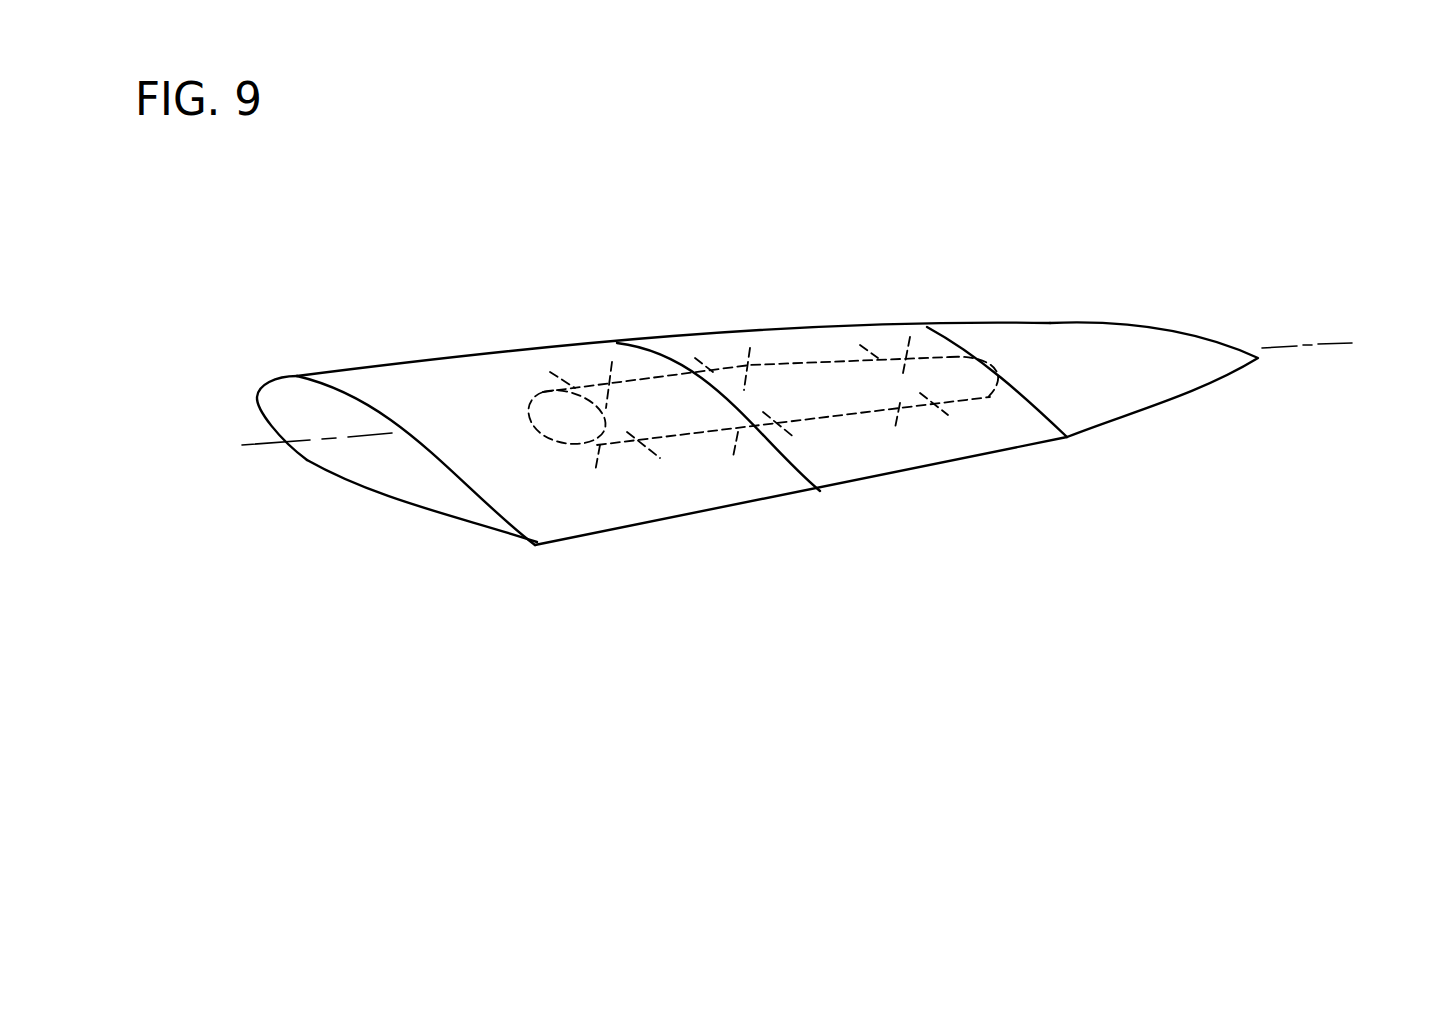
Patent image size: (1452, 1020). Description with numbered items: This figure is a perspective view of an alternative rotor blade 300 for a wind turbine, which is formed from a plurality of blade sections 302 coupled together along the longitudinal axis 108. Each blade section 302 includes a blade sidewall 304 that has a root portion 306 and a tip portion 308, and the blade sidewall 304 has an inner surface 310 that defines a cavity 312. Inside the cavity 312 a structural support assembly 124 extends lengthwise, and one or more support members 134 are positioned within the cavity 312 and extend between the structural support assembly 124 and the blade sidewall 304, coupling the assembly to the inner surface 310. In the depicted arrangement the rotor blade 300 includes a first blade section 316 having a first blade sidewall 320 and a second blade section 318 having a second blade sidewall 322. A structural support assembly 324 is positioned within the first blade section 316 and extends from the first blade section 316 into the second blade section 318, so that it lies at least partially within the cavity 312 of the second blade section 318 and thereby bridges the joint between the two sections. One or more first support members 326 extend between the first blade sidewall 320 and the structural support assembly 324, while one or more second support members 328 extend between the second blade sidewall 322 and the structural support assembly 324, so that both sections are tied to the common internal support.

The rotor blade 300 is at (1183, 195).
The blade section 302 is at (420, 358).
The blade sidewall 304 is at (637, 500).
The root portion 306 is at (555, 558).
The tip portion 308 is at (768, 520).
The inner surface 310 is at (417, 478).
The cavity 312 is at (330, 490).
The first blade section 316 is at (732, 335).
The second blade section 318 is at (483, 353).
The first blade sidewall 320 is at (925, 455).
The second blade sidewall 322 is at (585, 360).
The structural support assembly 324 is at (850, 418).
The first support member 326 is at (762, 352).
The second support member 328 is at (612, 378).
The structural support assembly 124 is at (832, 360).
The support member 134 is at (927, 327).
The longitudinal axis 108 is at (1335, 342).